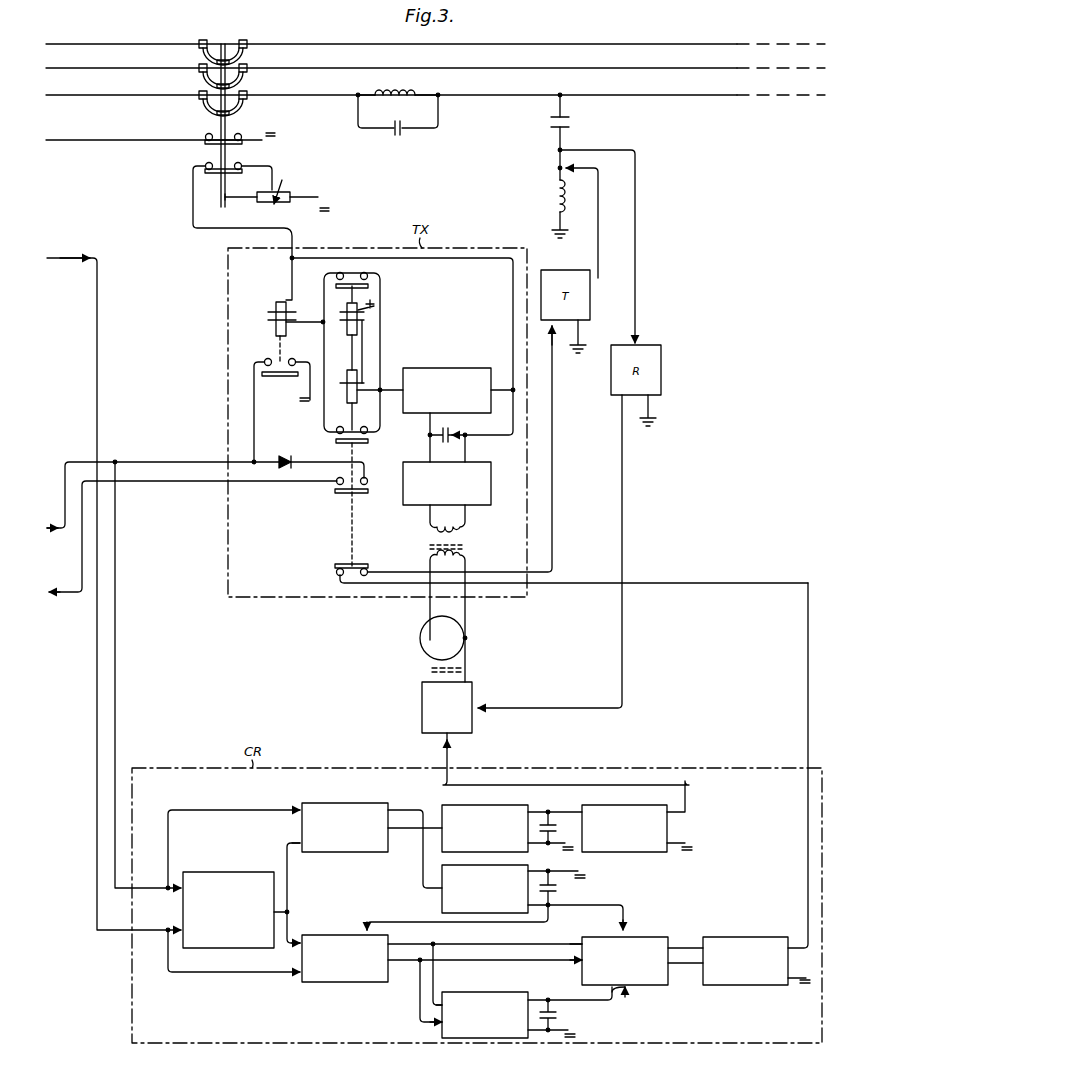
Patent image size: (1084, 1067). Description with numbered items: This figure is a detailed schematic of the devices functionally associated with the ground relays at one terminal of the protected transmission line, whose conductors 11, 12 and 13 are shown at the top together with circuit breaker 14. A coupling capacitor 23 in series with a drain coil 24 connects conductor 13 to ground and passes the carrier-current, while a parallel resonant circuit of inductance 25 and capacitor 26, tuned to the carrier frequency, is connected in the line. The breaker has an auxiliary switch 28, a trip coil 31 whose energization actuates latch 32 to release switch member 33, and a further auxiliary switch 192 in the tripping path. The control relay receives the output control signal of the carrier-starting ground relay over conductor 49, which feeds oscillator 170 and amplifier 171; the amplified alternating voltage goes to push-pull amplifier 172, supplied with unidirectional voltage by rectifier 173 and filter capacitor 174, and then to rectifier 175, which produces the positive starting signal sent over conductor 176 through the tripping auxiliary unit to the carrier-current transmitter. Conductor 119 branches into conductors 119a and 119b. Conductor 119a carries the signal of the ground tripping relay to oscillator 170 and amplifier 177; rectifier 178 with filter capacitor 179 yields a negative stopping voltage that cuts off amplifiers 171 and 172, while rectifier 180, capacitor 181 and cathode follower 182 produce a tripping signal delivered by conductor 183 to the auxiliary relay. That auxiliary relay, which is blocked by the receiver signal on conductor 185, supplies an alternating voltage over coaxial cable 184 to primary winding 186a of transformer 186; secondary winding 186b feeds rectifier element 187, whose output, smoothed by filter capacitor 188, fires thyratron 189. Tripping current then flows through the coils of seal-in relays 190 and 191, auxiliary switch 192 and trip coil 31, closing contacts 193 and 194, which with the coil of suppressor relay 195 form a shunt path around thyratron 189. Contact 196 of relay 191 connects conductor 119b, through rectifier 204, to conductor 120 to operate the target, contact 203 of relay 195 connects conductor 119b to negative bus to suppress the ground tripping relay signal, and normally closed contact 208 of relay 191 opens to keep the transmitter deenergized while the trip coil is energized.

The power line conductor 11 is at (668, 44).
The power line conductor 12 is at (669, 68).
The conductor 13 is at (669, 95).
The circuit breaker 14 is at (212, 125).
The coupling capacitor 23 is at (546, 124).
The drain coil 24 is at (556, 198).
The inductance 25 is at (418, 85).
The capacitor 26 is at (398, 135).
The auxiliary switch 28 is at (205, 144).
The trip coil 31 is at (284, 191).
The latch 32 is at (256, 204).
The switch member 33 is at (240, 105).
The conductor 49 is at (97, 362).
The conductor 119 is at (55, 463).
The conductor 119a is at (115, 640).
The conductor 119b is at (176, 461).
The conductor 120 is at (178, 490).
The oscillator 170 is at (230, 872).
The amplifier 171 is at (345, 988).
The push-pull amplifier 172 is at (651, 936).
The rectifier 173 is at (489, 993).
The filter capacitor 174 is at (556, 1015).
The rectifier 175 is at (743, 936).
The conductor 176 is at (808, 866).
The amplifier 177 is at (349, 805).
The rectifier 178 is at (440, 905).
The filter capacitor 179 is at (556, 890).
The rectifier 180 is at (489, 805).
The capacitor 181 is at (552, 820).
The cathode follower 182 is at (631, 805).
The conductor 183 is at (617, 785).
The coaxial cable 184 is at (465, 670).
The conductor 185 is at (556, 708).
The powdered iron core transformer 186 is at (420, 555).
The primary winding 186a is at (465, 560).
The secondary winding 186b is at (465, 526).
The rectifier element 187 is at (480, 462).
The filter capacitor 188 is at (455, 430).
The thyratron element 189 is at (454, 368).
The seal-in electromagnetic relay 190 is at (360, 318).
The seal-in electromagnetic relay 191 is at (343, 372).
The auxiliary switch 192 is at (216, 174).
The normally open contact 193 is at (368, 286).
The normally open contact 194 is at (368, 441).
The suppressor electromagnetic relay 195 is at (272, 313).
The normally open contact 196 is at (350, 495).
The normally open contact 203 is at (282, 411).
The rectifier 204 is at (289, 456).
The normally closed contact 208 is at (340, 564).